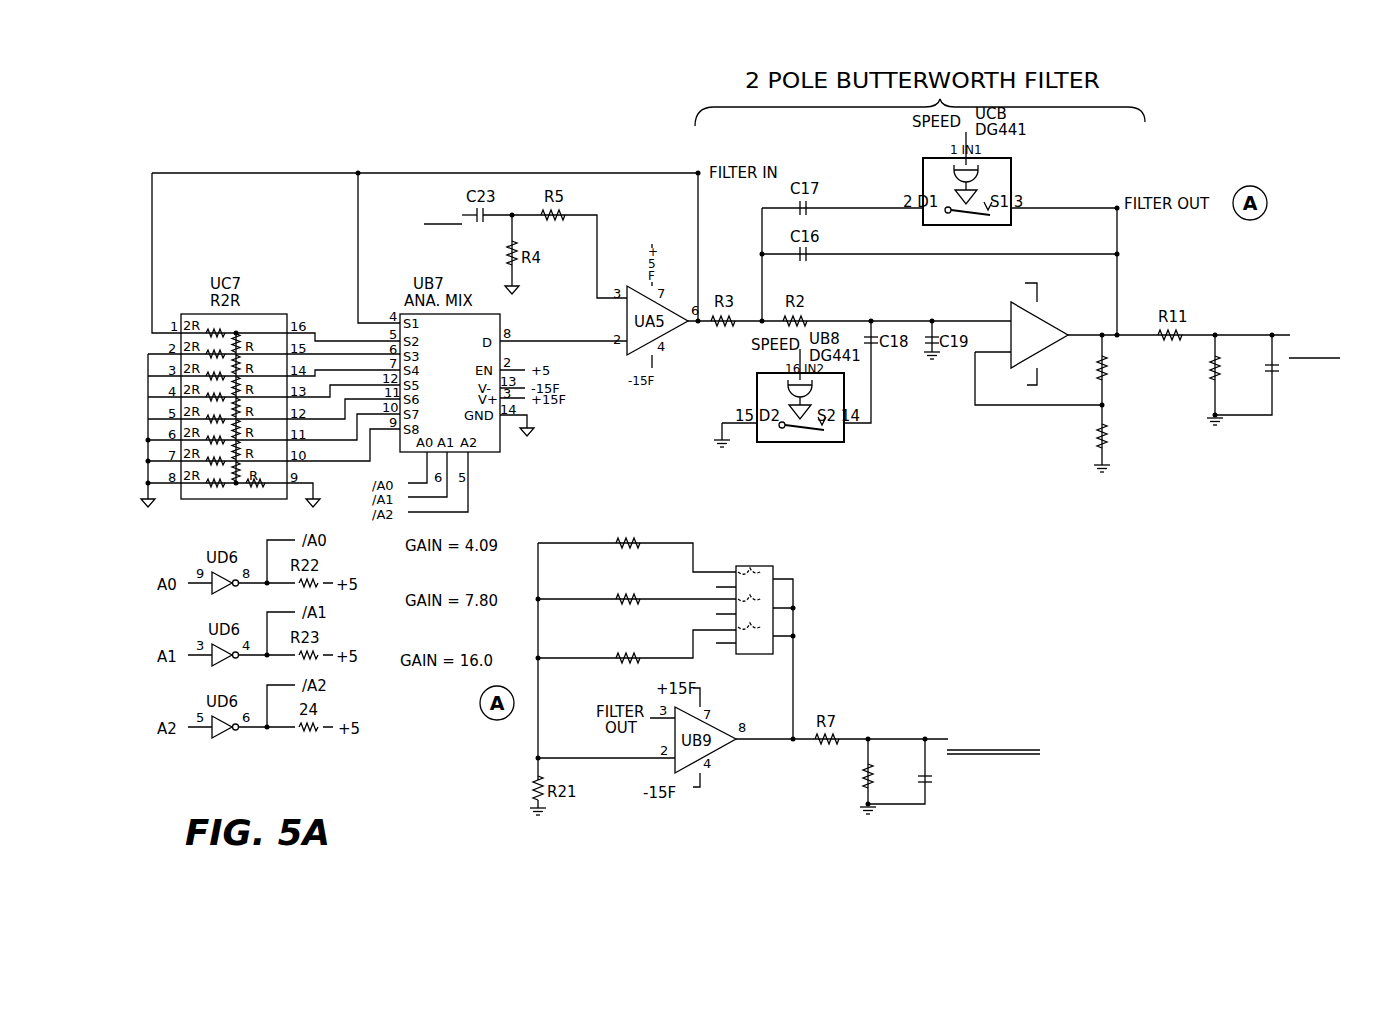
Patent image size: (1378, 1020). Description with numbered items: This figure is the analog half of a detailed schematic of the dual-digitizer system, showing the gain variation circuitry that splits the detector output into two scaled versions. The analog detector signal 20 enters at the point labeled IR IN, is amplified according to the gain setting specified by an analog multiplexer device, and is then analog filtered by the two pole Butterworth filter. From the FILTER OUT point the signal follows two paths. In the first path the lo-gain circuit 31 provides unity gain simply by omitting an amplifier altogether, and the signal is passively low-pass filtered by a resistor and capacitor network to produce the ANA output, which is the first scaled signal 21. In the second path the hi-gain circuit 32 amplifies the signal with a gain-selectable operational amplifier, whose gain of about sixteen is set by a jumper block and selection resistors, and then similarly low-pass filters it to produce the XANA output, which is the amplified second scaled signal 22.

The analog detector signal 20 is at (424, 210).
The lo-gain circuit 31 is at (1147, 371).
The first scaled signal 21 is at (1295, 328).
The hi-gain circuit 32 is at (796, 577).
The second scaled signal 22 is at (1010, 730).